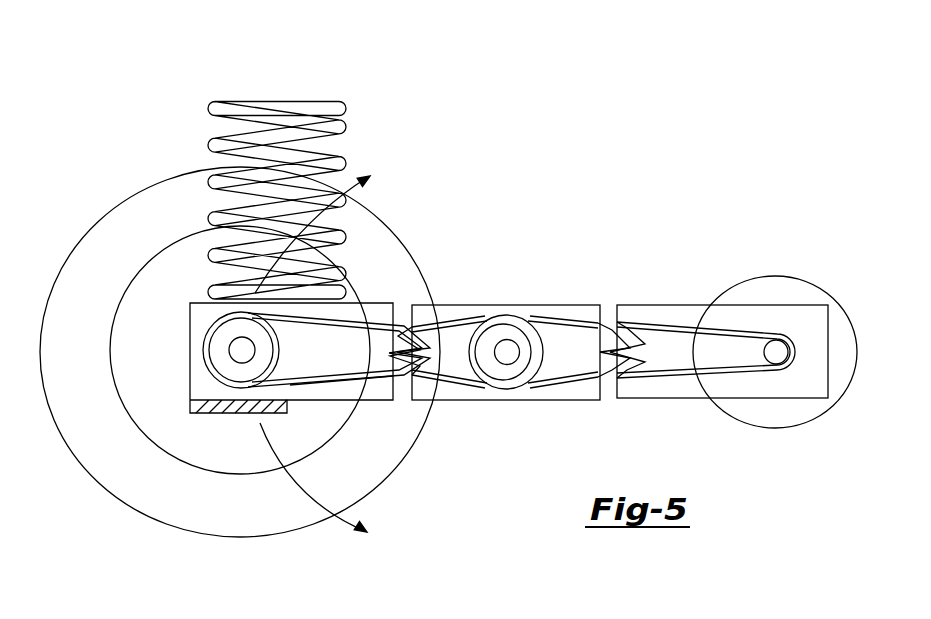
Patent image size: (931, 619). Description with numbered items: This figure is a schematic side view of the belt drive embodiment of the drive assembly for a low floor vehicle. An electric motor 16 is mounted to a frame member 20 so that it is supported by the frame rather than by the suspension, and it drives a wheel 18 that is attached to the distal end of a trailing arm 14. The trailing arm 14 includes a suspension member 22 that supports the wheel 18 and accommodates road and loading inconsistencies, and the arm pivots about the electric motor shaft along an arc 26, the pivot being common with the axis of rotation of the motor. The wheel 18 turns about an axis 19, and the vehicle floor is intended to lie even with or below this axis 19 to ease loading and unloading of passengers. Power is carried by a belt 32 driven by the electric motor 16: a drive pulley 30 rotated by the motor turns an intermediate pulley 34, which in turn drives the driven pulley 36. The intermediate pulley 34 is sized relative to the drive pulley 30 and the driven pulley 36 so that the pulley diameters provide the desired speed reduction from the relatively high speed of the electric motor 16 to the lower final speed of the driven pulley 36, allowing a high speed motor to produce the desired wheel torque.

The trailing arm 14 is at (458, 316).
The electric motor 16 is at (773, 277).
The wheel 18 is at (63, 265).
The axis 19 is at (242, 350).
The frame member 20 is at (291, 461).
The suspension member 22 is at (258, 110).
The arc 26 is at (272, 440).
The drive pulley 30 is at (777, 360).
The belt 32 is at (440, 376).
The intermediate pulley 34 is at (527, 378).
The driven pulley 36 is at (304, 387).